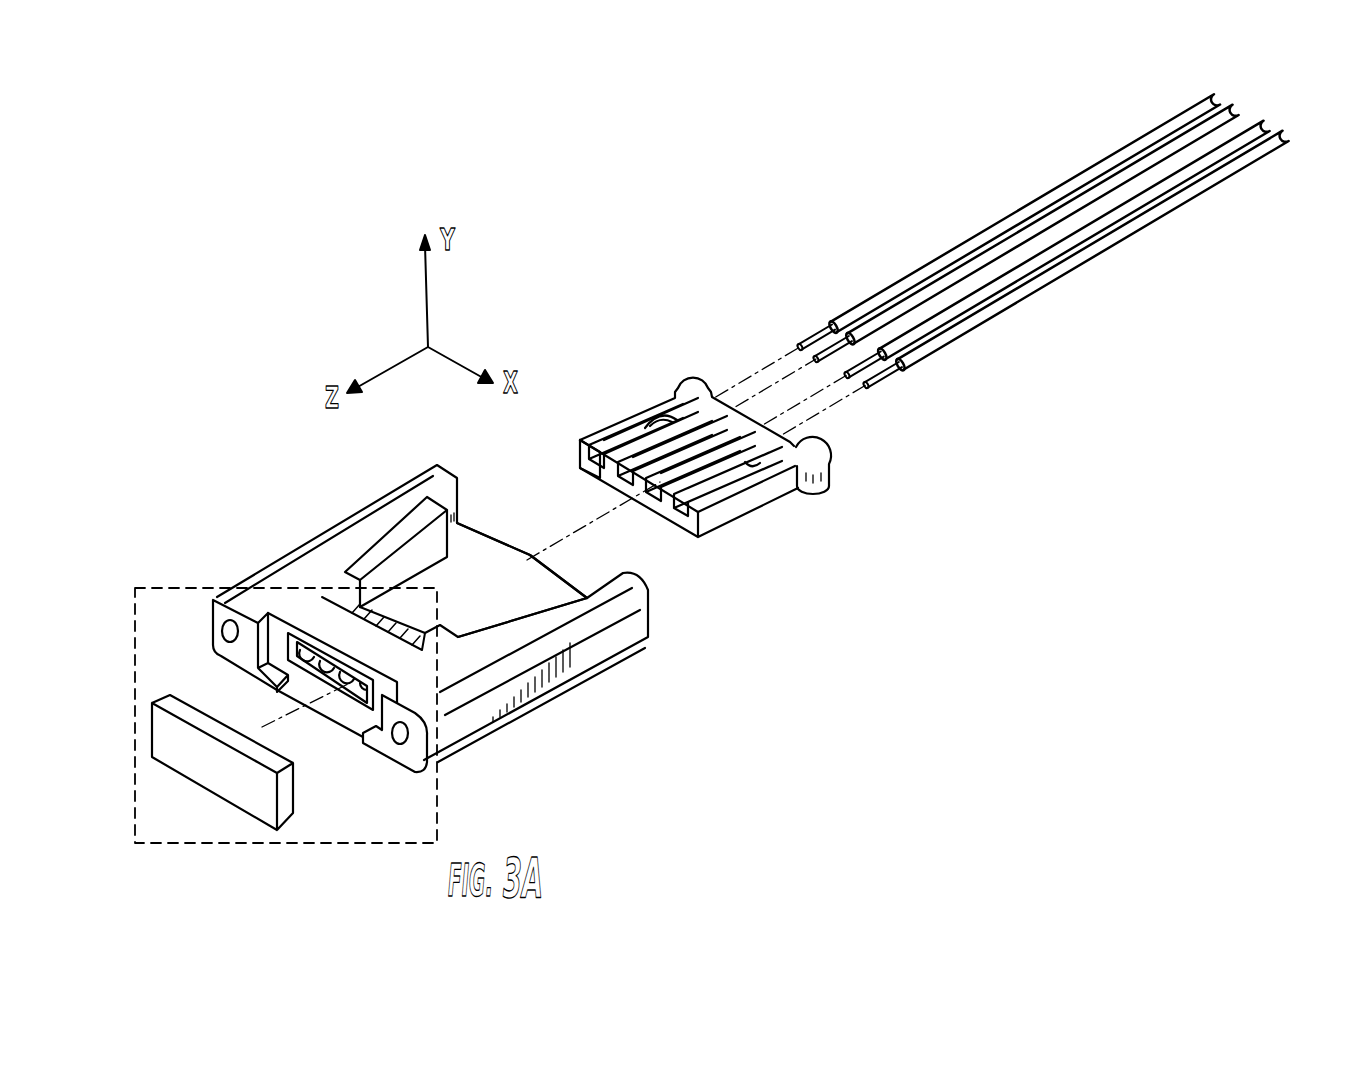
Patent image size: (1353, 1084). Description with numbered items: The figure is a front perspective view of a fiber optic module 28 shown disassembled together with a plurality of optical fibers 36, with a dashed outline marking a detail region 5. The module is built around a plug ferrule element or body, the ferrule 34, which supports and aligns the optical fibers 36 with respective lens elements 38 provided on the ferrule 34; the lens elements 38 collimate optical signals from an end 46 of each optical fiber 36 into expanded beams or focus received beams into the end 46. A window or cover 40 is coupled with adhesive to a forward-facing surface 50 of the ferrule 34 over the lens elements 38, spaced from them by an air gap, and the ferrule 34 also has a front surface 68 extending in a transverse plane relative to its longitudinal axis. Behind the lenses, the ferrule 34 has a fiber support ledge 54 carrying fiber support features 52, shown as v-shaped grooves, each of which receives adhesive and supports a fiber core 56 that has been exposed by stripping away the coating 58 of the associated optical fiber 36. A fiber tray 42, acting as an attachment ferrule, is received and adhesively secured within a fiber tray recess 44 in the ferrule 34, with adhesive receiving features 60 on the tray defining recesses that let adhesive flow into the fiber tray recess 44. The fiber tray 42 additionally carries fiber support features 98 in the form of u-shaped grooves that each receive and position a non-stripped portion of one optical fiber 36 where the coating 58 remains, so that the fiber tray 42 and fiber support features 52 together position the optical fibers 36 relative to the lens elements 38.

The fiber optic module 28 is at (294, 442).
The detail region 5 is at (288, 846).
The plug ferrule element or body (ferrule) 34 is at (320, 532).
The optical fibers 36 is at (1070, 176).
The lens elements 38 is at (350, 683).
The window or cover 40 is at (150, 718).
The fiber tray 42 is at (688, 372).
The fiber tray recess 44 is at (482, 552).
The end of optical fiber 46 is at (793, 350).
The forward-facing surface 50 is at (280, 627).
The fiber support features 52 is at (420, 645).
The fiber support ledge 54 is at (428, 620).
The fiber core 56 is at (817, 337).
The coating 58 is at (970, 243).
The adhesive receiving features 60 is at (615, 437).
The front surface 68 is at (213, 617).
The fiber support features 98 is at (648, 510).